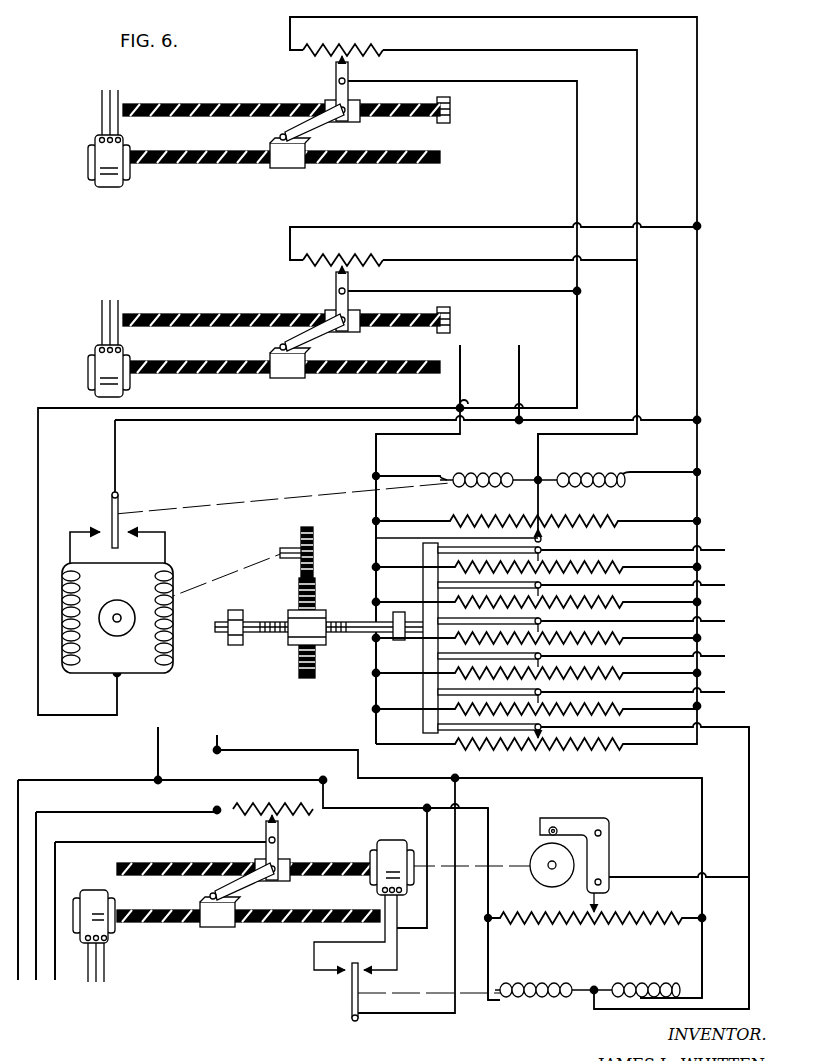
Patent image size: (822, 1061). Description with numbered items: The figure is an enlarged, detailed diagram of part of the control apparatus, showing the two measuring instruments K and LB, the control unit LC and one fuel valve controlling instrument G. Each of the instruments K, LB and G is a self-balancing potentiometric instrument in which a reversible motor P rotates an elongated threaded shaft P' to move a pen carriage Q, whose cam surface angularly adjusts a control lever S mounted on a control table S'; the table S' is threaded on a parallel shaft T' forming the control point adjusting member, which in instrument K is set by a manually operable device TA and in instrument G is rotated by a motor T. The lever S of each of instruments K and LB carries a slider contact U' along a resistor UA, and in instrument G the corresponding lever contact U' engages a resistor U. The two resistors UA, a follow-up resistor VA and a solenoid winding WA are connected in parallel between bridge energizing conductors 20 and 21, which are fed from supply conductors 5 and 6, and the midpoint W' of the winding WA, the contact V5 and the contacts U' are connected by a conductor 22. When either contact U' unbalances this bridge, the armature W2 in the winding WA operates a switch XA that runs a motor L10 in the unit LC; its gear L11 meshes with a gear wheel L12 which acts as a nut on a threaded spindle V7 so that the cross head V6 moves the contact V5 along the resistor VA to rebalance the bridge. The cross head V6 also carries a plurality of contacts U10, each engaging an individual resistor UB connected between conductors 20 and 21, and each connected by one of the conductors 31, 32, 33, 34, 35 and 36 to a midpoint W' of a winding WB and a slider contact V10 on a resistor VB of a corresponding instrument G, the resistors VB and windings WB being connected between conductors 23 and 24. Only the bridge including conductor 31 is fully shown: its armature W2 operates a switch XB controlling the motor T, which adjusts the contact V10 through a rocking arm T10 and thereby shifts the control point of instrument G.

The control instrument K is at (162, 75).
The instrument LB is at (162, 292).
The control unit LC is at (304, 482).
The control instrument G is at (225, 712).
The threaded shaft T' is at (264, 476).
The threaded shaft P' is at (278, 553).
The reversible motor P is at (112, 536).
The pen carriage Q is at (295, 166).
The control lever S is at (277, 503).
The control table S' is at (317, 497).
The slider contact U' is at (324, 468).
The resistor UA is at (318, 54).
The resistance U is at (269, 823).
The adjusting device TA is at (451, 112).
The control point adjusting motor T is at (364, 891).
The switch XA is at (118, 510).
The switch XB is at (350, 1003).
The motor L10 is at (122, 602).
The gear L11 is at (308, 550).
The gear wheel L12 is at (298, 668).
The threaded spindle V7 is at (362, 638).
The cross head V6 is at (424, 546).
The contact V5 is at (544, 541).
The contacts U10 is at (438, 730).
The resistor UB is at (612, 744).
The follow-up resistor VA is at (568, 518).
The solenoid winding WA is at (484, 476).
The midpoint W' is at (567, 729).
The armature W2 is at (612, 984).
The solenoid winding WB is at (552, 996).
The resistor VB is at (562, 914).
The slider contact V10 is at (598, 904).
The rocking arm T10 is at (604, 870).
The supply conductor 5 is at (460, 366).
The supply conductor 6 is at (518, 386).
The bridge energizing conductor 20 is at (574, 322).
The bridge energizing conductor 21 is at (696, 322).
The conductor 22 is at (636, 322).
The conductor 23 is at (490, 964).
The conductor 24 is at (700, 826).
The conductor 31 is at (749, 797).
The conductor 32 is at (650, 693).
The conductor 33 is at (650, 657).
The conductor 34 is at (650, 622).
The conductor 35 is at (650, 586).
The conductor 36 is at (650, 551).